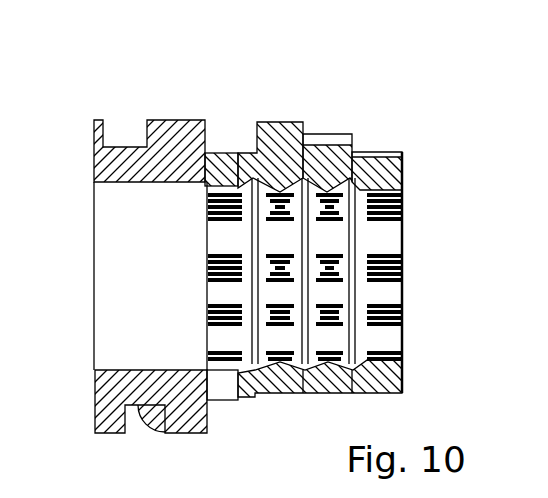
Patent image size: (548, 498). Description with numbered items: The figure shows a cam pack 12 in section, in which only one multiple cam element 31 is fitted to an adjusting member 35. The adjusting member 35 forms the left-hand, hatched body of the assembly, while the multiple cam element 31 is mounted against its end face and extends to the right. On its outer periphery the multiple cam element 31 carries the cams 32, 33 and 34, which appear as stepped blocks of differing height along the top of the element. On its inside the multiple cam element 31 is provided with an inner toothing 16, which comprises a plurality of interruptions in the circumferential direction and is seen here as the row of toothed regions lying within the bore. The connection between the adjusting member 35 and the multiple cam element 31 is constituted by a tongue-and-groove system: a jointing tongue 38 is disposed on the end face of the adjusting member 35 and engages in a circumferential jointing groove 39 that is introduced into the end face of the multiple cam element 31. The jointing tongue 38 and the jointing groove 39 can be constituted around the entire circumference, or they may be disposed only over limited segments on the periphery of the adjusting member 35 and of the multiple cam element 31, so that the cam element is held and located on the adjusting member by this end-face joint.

The cam pack 12 is at (92, 95).
The inner toothing 16 is at (403, 265).
The multiple cam element 31 is at (403, 178).
The cam 32 is at (283, 122).
The cam 33 is at (330, 145).
The cam 34 is at (383, 152).
The adjusting member 35 is at (167, 118).
The jointing tongue 38 is at (220, 172).
The jointing groove 39 is at (223, 395).